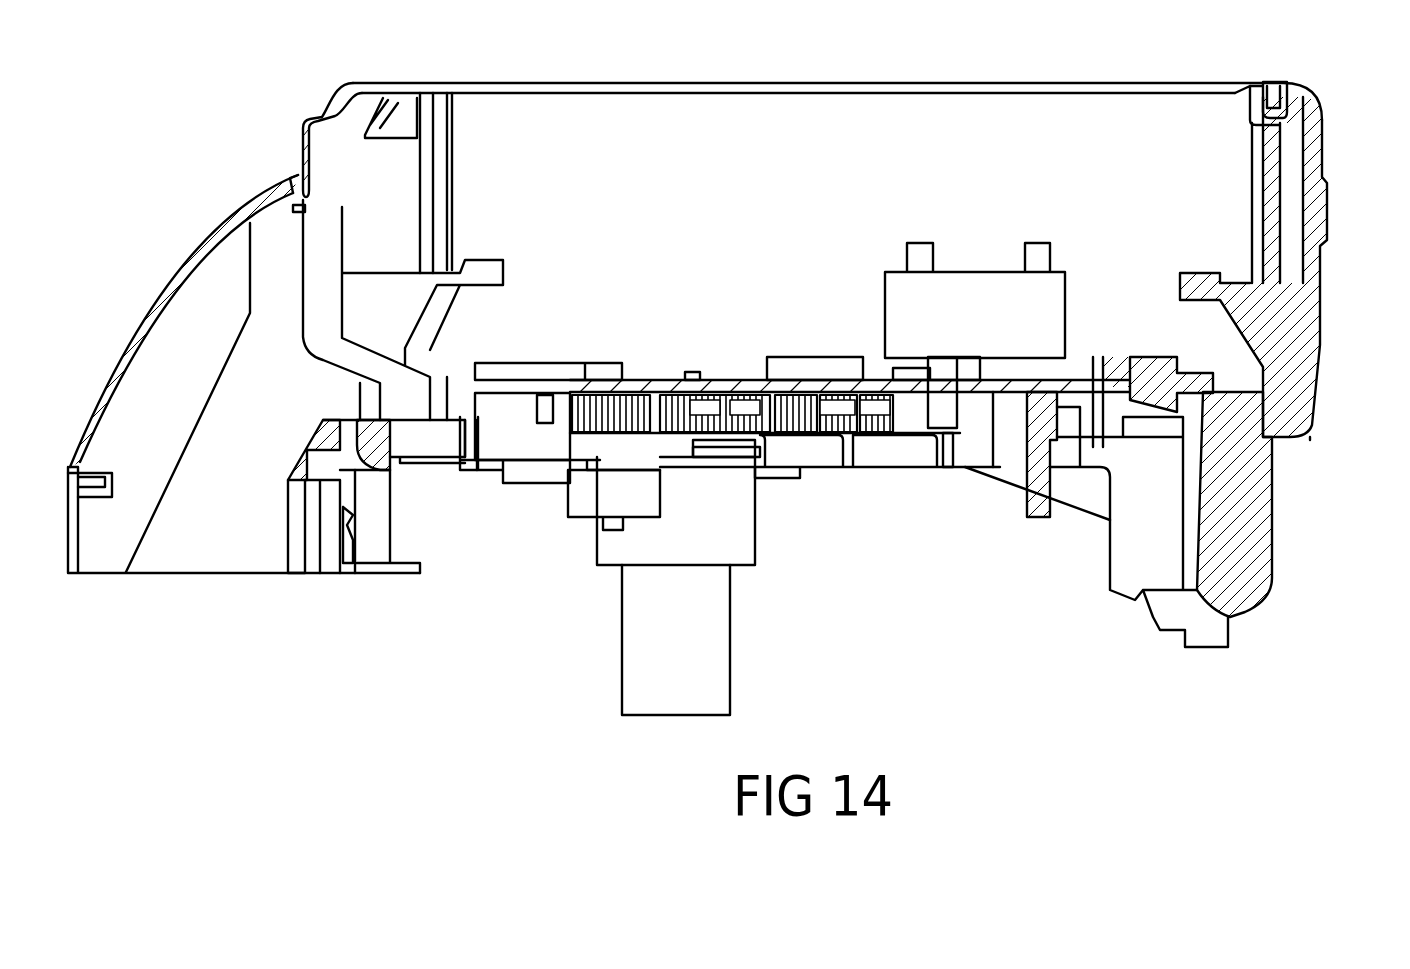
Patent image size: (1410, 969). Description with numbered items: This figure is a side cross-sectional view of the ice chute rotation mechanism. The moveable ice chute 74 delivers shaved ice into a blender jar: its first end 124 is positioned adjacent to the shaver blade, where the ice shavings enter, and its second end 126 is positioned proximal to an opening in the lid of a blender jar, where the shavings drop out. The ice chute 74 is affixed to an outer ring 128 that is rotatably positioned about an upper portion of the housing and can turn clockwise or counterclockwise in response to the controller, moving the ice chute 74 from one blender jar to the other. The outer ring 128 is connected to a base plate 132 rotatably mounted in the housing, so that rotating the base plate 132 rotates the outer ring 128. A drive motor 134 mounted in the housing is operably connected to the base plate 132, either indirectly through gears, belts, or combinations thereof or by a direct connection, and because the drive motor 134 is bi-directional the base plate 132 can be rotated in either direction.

The ice chute 74 is at (183, 273).
The first end of the ice chute 124 is at (298, 172).
The second end of the ice chute 126 is at (230, 573).
The outer ring 128 is at (1317, 80).
The base plate 132 is at (993, 467).
The drive motor 134 is at (710, 640).